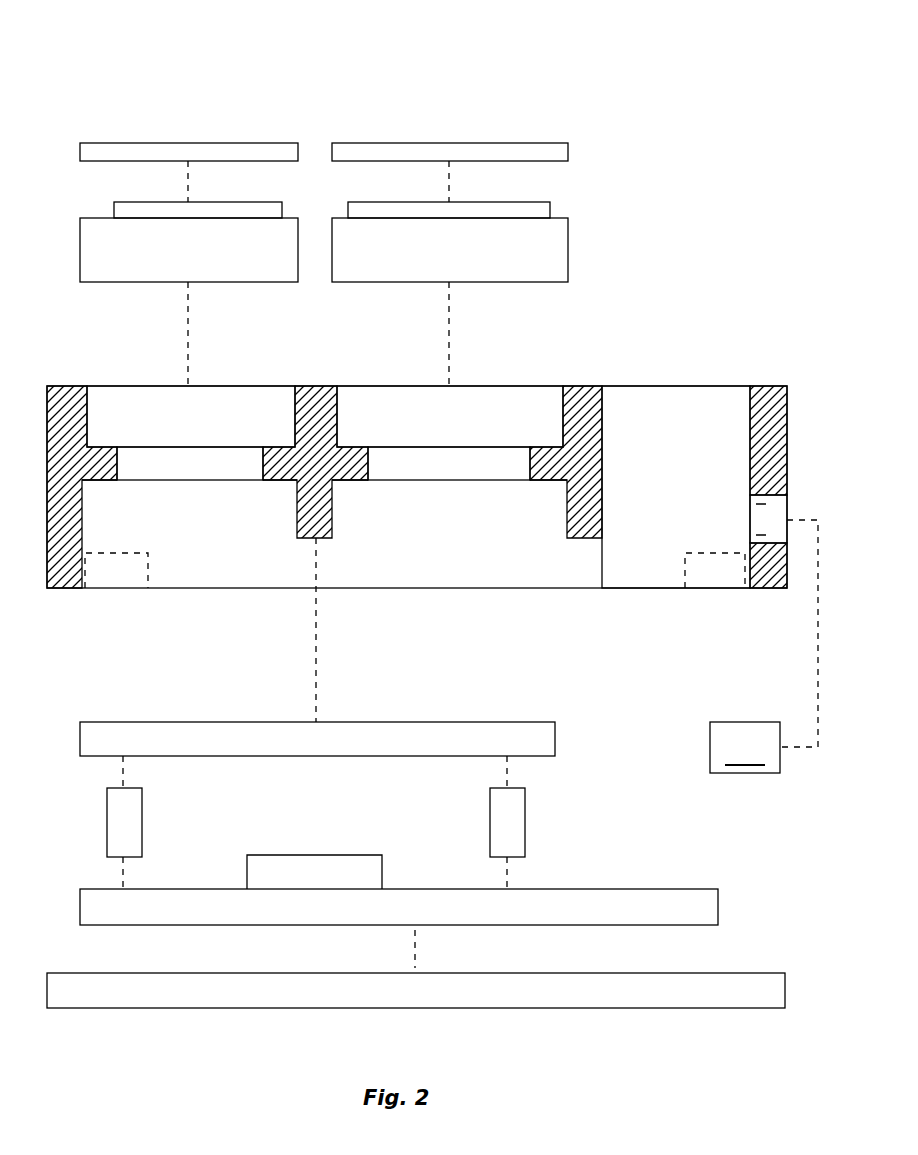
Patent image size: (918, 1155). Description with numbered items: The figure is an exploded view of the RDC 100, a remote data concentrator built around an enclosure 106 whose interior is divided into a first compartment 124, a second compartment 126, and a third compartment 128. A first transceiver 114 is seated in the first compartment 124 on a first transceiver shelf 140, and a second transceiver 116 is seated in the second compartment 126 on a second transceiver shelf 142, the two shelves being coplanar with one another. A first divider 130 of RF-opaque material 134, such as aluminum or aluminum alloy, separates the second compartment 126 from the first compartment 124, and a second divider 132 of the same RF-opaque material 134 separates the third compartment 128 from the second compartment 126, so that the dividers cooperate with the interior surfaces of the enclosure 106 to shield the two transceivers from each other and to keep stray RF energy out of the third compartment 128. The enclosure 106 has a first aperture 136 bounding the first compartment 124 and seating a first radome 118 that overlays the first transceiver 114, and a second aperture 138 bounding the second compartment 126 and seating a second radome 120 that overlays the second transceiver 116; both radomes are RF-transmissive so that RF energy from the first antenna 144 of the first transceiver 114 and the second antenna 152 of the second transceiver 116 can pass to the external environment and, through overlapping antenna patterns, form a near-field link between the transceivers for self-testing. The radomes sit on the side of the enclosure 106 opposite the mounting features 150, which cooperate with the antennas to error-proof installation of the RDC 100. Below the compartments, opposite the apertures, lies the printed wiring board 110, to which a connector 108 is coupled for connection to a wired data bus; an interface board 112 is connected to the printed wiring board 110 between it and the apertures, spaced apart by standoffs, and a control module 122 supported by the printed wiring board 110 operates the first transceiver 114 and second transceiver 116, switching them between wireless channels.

The RDC 100 is at (116, 60).
The enclosure 106 is at (688, 358).
The connector 108 is at (755, 773).
The printed wiring board 110 is at (710, 906).
The interface board 112 is at (537, 722).
The first transceiver 114 is at (87, 238).
The second transceiver 116 is at (562, 240).
The first radome 118 is at (247, 150).
The second radome 120 is at (513, 150).
The control module 122 is at (357, 858).
The first compartment 124 is at (191, 416).
The second compartment 126 is at (450, 416).
The third compartment 128 is at (676, 487).
The first divider 130 is at (332, 502).
The second divider 132 is at (600, 500).
The RF-opaque material 134 is at (78, 504).
The first aperture 136 is at (240, 357).
The second aperture 138 is at (501, 357).
The first transceiver shelf 140 is at (227, 446).
The second transceiver shelf 142 is at (503, 446).
The first antenna 144 is at (116, 215).
The mounting features 150 is at (135, 588).
The second antenna 152 is at (548, 215).